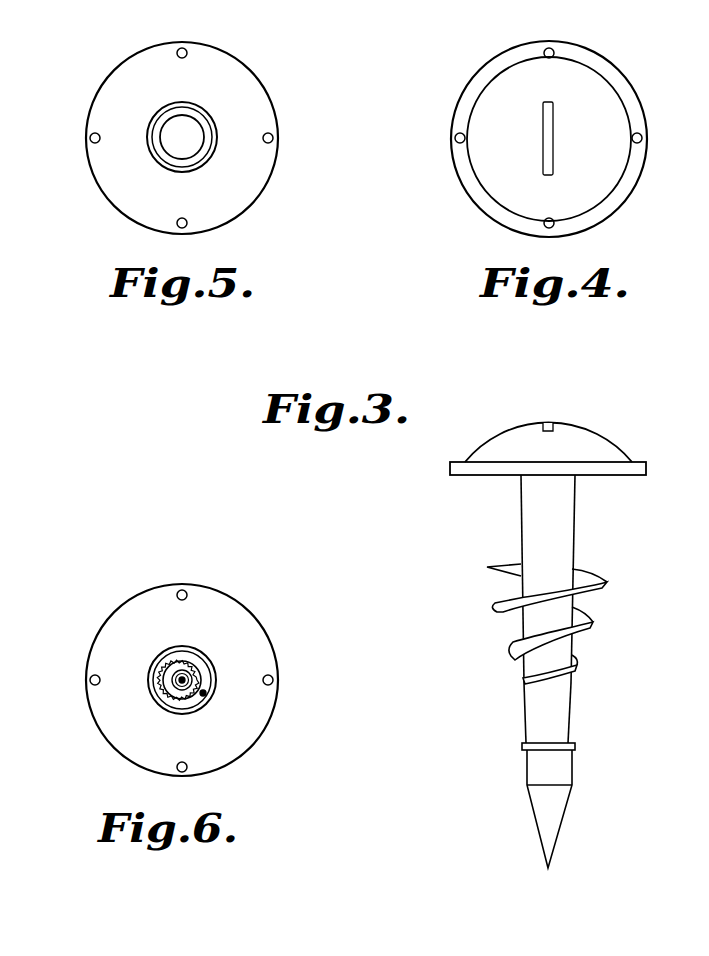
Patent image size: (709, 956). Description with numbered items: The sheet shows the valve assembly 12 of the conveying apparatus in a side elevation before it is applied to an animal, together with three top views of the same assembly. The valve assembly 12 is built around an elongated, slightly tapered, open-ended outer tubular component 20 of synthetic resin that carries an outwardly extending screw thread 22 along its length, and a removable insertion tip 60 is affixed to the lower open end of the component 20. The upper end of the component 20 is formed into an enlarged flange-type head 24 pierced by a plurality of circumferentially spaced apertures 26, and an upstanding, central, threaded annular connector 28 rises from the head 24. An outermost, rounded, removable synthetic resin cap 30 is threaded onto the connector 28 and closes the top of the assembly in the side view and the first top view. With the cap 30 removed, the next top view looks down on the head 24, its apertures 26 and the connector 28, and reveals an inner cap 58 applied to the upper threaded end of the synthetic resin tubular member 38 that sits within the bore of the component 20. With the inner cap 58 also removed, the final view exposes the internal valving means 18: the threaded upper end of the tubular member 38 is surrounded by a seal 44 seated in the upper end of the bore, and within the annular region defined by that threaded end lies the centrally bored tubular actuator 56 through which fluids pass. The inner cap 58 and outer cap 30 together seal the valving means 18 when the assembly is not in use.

In FIG. 5, the valve assembly 12 is at (268, 73).
In FIG. 4, the valve assembly 12 is at (591, 45).
In FIG. 3, the valve assembly 12 is at (621, 431).
In FIG. 6, the valve assembly 12 is at (238, 587).
In FIG. 6, the valving means 18 is at (204, 693).
In FIG. 3, the outer tubular component 20 is at (528, 540).
In FIG. 3, the screw thread 22 is at (588, 622).
In FIG. 5, the head 24 is at (103, 87).
In FIG. 4, the head 24 is at (482, 196).
In FIG. 3, the head 24 is at (608, 476).
In FIG. 6, the head 24 is at (105, 735).
In FIG. 5, the apertures 26 is at (274, 139).
In FIG. 4, the apertures 26 is at (645, 138).
In FIG. 6, the apertures 26 is at (90, 680).
In FIG. 5, the annular connector 28 is at (155, 147).
In FIG. 6, the annular connector 28 is at (148, 680).
In FIG. 4, the cap 30 is at (492, 98).
In FIG. 3, the cap 30 is at (509, 434).
In FIG. 6, the tubular member 38 is at (170, 668).
In FIG. 6, the seal 44 is at (172, 694).
In FIG. 6, the tubular actuator 56 is at (192, 668).
In FIG. 5, the inner cap 58 is at (186, 127).
In FIG. 3, the insertion tip 60 is at (533, 770).